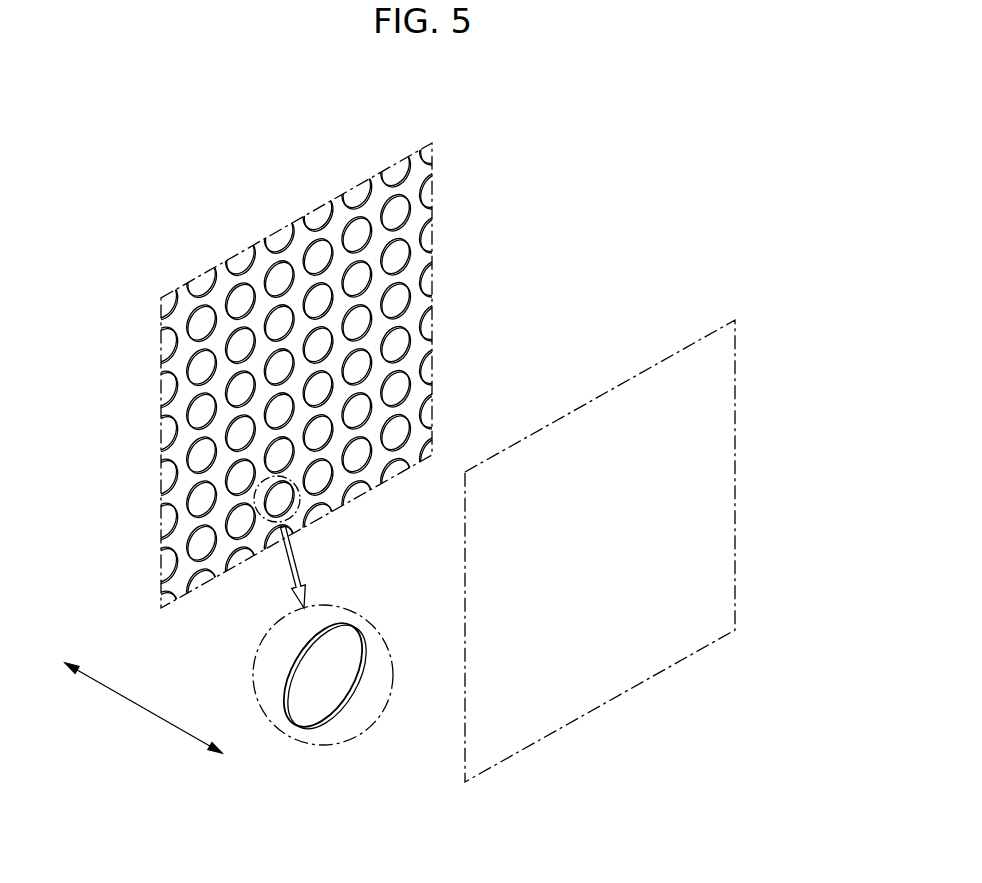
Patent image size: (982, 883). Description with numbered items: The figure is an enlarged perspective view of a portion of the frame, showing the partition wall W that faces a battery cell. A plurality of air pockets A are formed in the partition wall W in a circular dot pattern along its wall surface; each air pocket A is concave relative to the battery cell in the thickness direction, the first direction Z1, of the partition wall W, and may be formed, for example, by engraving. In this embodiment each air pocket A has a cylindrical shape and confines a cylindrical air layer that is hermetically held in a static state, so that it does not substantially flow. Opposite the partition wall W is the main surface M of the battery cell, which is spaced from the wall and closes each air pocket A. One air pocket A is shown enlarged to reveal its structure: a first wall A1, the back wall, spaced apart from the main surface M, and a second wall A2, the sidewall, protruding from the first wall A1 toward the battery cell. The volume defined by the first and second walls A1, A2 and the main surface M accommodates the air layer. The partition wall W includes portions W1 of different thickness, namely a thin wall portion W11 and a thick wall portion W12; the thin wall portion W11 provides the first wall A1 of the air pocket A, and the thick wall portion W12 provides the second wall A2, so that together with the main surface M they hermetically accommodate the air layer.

The partition wall W is at (359, 352).
The air pocket A is at (393, 213).
The thin wall portion W11 is at (393, 300).
The thick wall portion W12 is at (393, 323).
The partition wall portions W1 is at (475, 308).
The main surface of battery cell M is at (737, 370).
The first wall A1 is at (327, 673).
The second wall A2 is at (328, 713).
The first direction Z1 is at (143, 708).